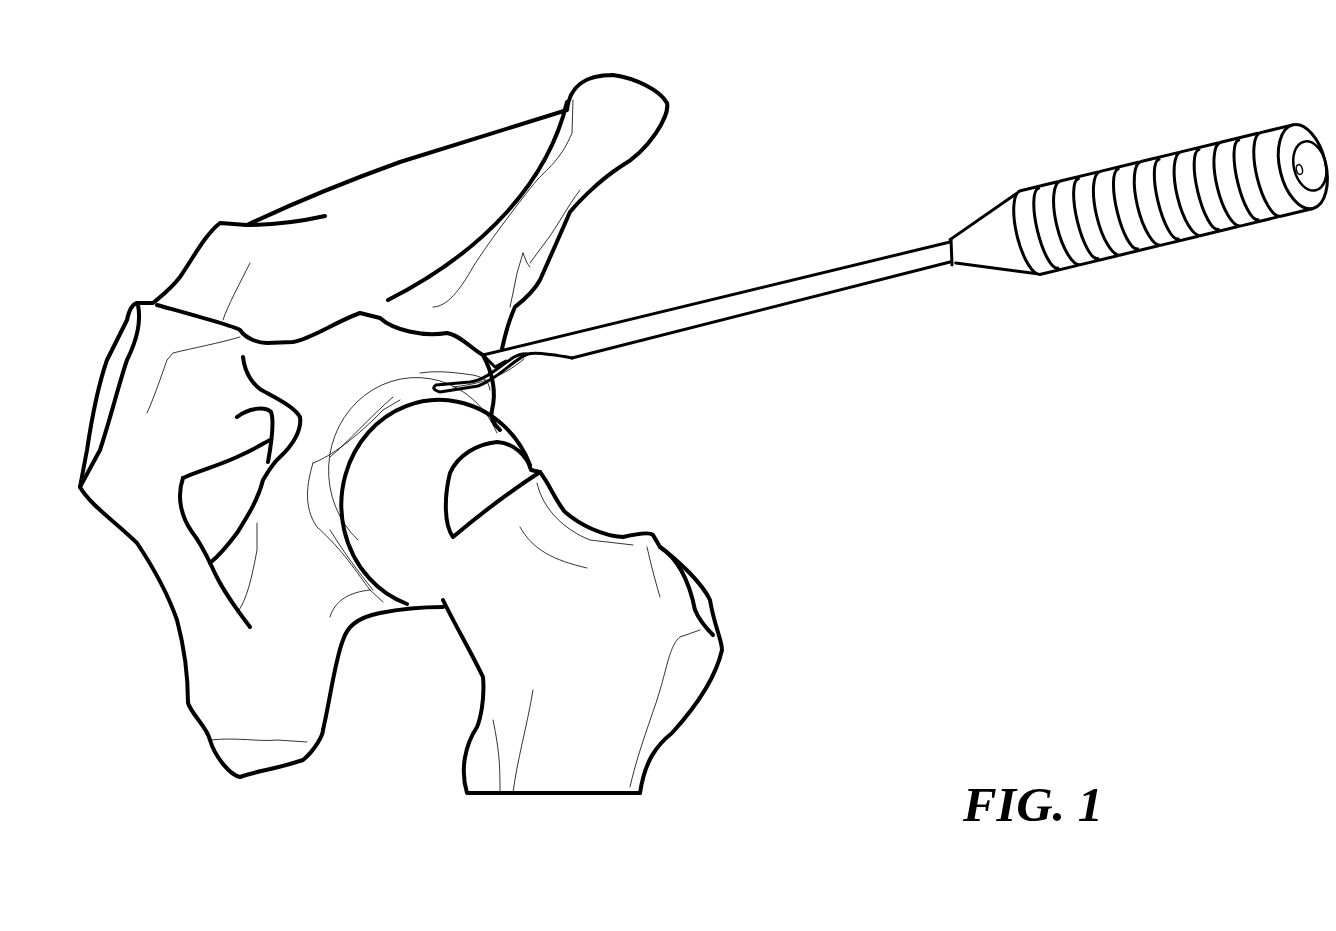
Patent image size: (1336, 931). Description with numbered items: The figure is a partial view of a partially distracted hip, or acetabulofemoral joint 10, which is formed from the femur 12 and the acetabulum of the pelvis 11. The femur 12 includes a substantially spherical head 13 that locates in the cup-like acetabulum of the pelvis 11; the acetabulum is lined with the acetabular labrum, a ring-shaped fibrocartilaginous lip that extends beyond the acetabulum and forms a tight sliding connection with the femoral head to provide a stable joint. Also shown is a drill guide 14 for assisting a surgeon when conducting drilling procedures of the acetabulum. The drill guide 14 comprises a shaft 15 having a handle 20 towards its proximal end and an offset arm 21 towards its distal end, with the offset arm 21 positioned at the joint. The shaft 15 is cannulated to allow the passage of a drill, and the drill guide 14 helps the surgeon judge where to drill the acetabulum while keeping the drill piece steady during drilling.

The acetabulofemoral joint 10 is at (172, 752).
The pelvis 11 is at (378, 197).
The femur 12 is at (698, 662).
The head 13 is at (402, 527).
The drill guide 14 is at (844, 342).
The shaft 15 is at (813, 275).
The handle 20 is at (1133, 163).
The offset arm 21 is at (493, 392).